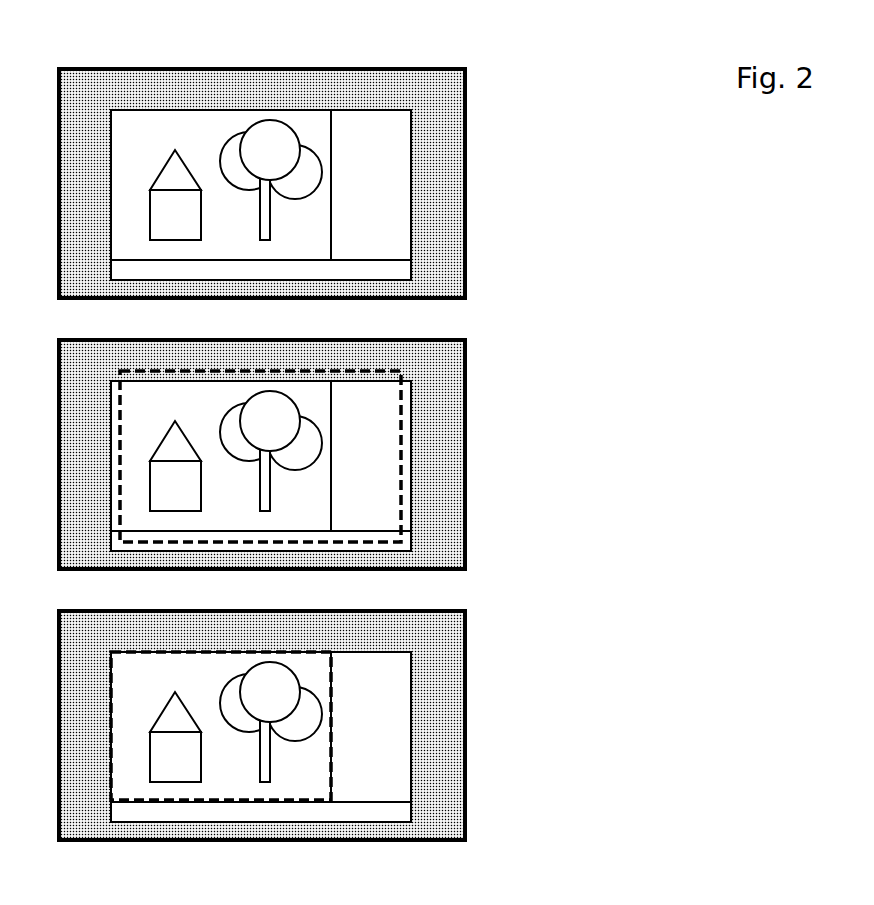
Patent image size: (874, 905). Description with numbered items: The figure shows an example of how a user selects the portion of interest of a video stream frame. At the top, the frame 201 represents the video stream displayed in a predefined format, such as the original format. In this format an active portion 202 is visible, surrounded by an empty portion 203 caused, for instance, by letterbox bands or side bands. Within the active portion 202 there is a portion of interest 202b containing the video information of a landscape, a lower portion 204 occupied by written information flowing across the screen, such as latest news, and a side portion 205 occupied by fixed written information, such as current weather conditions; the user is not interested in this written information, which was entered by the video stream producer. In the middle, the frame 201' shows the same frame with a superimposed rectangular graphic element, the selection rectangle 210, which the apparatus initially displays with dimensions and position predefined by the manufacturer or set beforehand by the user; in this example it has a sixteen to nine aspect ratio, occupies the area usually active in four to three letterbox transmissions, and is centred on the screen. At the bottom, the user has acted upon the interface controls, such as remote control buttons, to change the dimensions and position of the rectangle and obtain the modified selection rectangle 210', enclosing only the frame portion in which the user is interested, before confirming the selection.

The frame 201 is at (333, 168).
The frame with superimposed selection rectangle 201' is at (332, 454).
The active portion 202 is at (415, 232).
The portion of interest 202b is at (205, 138).
The empty portion 203 is at (452, 107).
The lower portion 204 is at (398, 272).
The side portion 205 is at (385, 122).
The selection rectangle 210 is at (354, 456).
The modified selection rectangle 210' is at (343, 726).